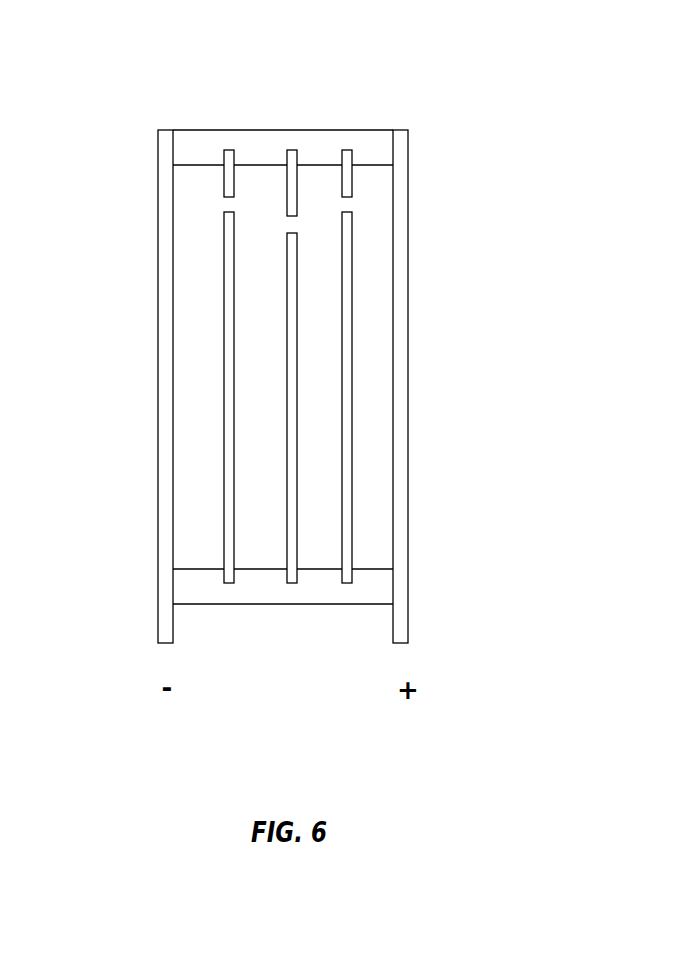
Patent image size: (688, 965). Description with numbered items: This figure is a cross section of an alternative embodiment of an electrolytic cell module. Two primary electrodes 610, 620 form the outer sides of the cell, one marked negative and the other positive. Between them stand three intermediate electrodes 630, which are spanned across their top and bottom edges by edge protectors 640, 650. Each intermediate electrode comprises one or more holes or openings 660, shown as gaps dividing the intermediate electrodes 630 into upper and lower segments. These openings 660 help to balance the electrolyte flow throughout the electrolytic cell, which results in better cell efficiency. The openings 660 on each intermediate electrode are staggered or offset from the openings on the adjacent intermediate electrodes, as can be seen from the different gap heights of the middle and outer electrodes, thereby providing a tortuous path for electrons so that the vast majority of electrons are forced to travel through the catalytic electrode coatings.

The primary electrode 610 is at (157, 556).
The primary electrode 620 is at (409, 568).
The intermediate electrodes 630 is at (344, 150).
The edge protector 640 is at (369, 150).
The edge protector 650 is at (312, 592).
The openings 660 is at (342, 212).